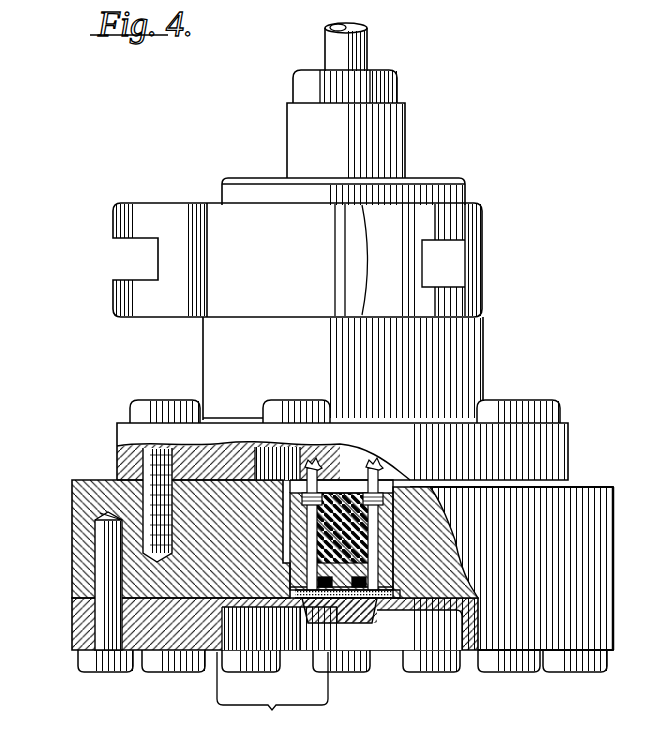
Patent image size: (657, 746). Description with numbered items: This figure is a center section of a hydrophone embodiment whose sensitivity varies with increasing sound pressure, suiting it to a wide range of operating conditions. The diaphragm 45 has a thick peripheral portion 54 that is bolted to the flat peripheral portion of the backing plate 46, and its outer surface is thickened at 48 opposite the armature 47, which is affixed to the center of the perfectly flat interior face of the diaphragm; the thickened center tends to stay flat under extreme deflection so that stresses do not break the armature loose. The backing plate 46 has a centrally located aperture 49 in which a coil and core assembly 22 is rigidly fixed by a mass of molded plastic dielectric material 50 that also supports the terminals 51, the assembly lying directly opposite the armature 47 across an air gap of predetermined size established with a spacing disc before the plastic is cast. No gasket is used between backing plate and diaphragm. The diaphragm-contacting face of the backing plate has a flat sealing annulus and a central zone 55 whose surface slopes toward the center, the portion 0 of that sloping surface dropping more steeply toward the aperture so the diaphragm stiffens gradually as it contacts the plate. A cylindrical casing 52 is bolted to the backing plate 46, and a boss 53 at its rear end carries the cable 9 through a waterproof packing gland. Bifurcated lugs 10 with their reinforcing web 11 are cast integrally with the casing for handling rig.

The electric cable 9 is at (366, 52).
The boss 53 is at (293, 123).
The bifurcated lugs 10 is at (172, 215).
The reinforcing web 11 is at (284, 266).
The cylindrical casing 52 is at (291, 357).
The backing plate 46 is at (78, 548).
The thick peripheral portion 54 is at (72, 613).
The molded plastic dielectric material 50 is at (405, 546).
The coil and core assembly 22 is at (392, 588).
The terminals 51 is at (368, 480).
The aperture 49 is at (390, 478).
The armature 47 is at (372, 601).
The thickened center portion 48 is at (367, 625).
The central zone 55 is at (397, 596).
The diaphragm 45 is at (298, 652).
The portion O of the sloping surface 0 is at (272, 691).